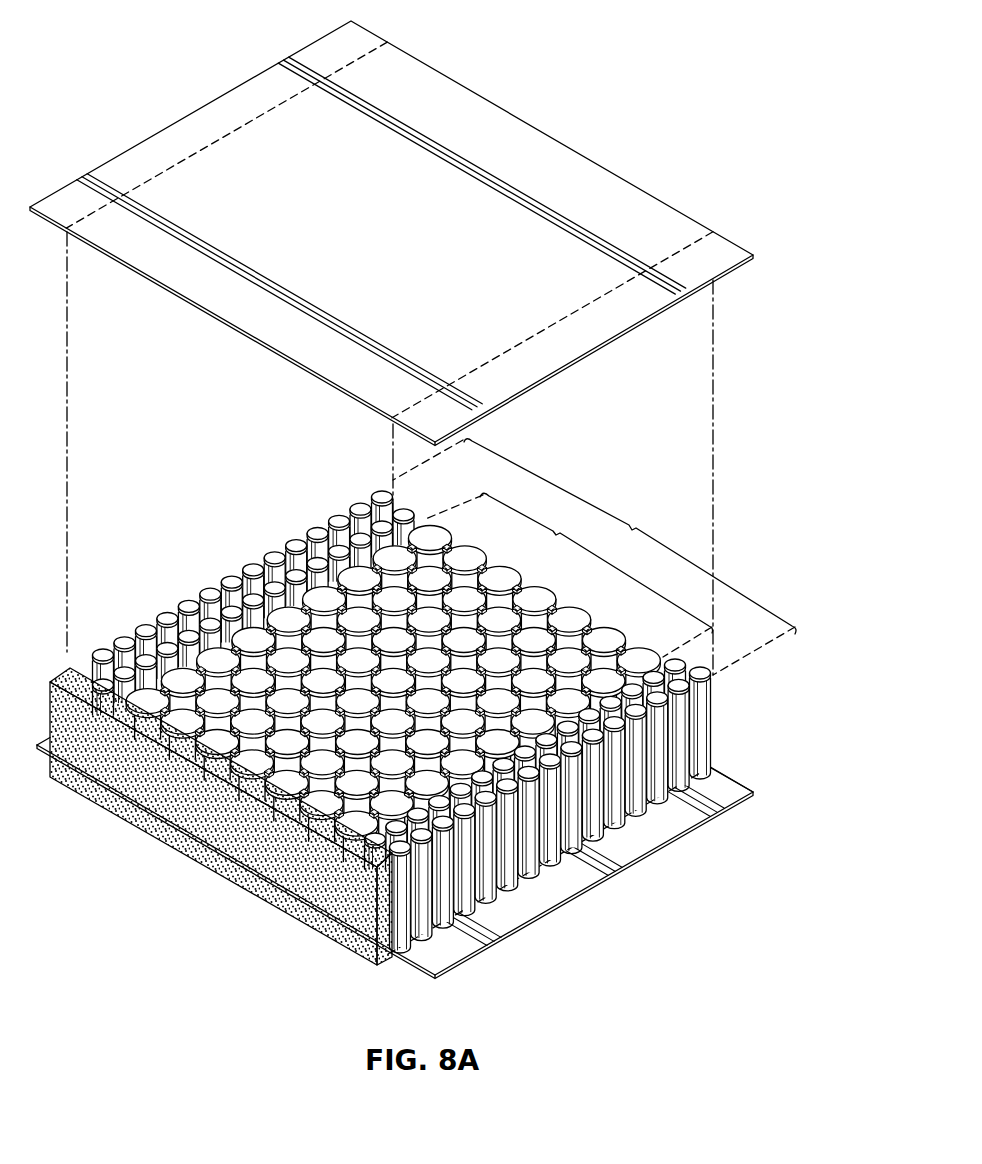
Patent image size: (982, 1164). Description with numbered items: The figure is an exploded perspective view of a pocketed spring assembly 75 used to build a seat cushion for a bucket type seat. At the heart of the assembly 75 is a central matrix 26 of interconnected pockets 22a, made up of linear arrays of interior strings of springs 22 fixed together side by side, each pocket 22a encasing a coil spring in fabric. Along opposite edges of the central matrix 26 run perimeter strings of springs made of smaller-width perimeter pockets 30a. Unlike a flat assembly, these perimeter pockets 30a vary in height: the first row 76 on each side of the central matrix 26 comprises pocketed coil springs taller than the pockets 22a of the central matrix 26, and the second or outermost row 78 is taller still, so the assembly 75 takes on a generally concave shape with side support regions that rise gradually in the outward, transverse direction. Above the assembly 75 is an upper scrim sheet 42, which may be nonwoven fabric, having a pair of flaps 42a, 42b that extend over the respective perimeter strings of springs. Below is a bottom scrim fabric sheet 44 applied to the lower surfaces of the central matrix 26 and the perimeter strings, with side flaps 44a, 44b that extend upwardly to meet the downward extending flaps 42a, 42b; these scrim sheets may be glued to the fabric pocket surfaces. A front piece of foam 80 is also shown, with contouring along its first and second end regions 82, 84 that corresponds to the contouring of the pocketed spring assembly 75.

The interior string of springs 22 is at (452, 532).
The interior pocket 22a is at (353, 579).
The central matrix 26 is at (568, 575).
The perimeter pocket 30a is at (300, 580).
The upper scrim sheet 42 is at (414, 229).
The flap of upper scrim sheet 42a is at (373, 48).
The flap of upper scrim sheet 42b is at (713, 256).
The bottom scrim fabric sheet 44 is at (412, 813).
The side flap of bottom scrim sheet 44a is at (47, 744).
The side flap of bottom scrim sheet 44b is at (722, 730).
The pocketed spring assembly 75 is at (594, 557).
The first row of perimeter string of springs 76 is at (420, 510).
The second row of perimeter string of springs 78 is at (400, 496).
The front piece of foam 80 is at (209, 830).
The first end region of foam 82 is at (50, 765).
The second end region of foam 84 is at (362, 937).